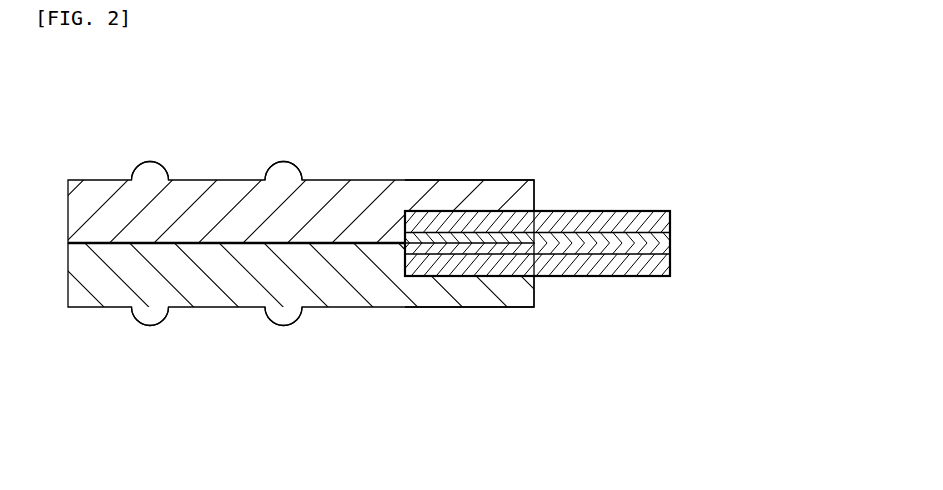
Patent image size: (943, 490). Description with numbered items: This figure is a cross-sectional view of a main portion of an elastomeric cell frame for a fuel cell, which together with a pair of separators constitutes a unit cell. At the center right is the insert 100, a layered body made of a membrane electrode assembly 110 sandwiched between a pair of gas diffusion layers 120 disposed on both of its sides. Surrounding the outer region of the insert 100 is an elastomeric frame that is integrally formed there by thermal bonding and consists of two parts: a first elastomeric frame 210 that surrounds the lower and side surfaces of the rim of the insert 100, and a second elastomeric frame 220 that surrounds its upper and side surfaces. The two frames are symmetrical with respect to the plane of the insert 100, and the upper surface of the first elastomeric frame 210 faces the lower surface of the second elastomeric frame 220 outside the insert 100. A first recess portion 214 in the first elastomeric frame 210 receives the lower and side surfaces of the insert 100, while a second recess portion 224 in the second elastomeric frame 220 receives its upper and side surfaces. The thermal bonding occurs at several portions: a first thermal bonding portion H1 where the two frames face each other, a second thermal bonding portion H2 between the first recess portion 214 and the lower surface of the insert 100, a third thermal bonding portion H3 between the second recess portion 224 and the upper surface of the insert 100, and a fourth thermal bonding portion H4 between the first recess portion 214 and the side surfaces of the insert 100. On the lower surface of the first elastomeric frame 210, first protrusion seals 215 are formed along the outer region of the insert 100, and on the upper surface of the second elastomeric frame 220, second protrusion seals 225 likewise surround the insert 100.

The insert 100 is at (755, 207).
The membrane electrode assembly 110 is at (658, 240).
The gas diffusion layers 120 is at (662, 218).
The first elastomeric frame 210 is at (93, 297).
The first recess portion 214 is at (535, 295).
The first protrusion seals 215 is at (284, 315).
The second elastomeric frame 220 is at (95, 193).
The second recess portion 224 is at (537, 188).
The second protrusion seals 225 is at (284, 170).
The first thermal bonding portion H1 is at (348, 245).
The second thermal bonding portion H2 is at (503, 277).
The third thermal bonding portion H3 is at (503, 208).
The fourth thermal bonding portion H4 is at (404, 253).